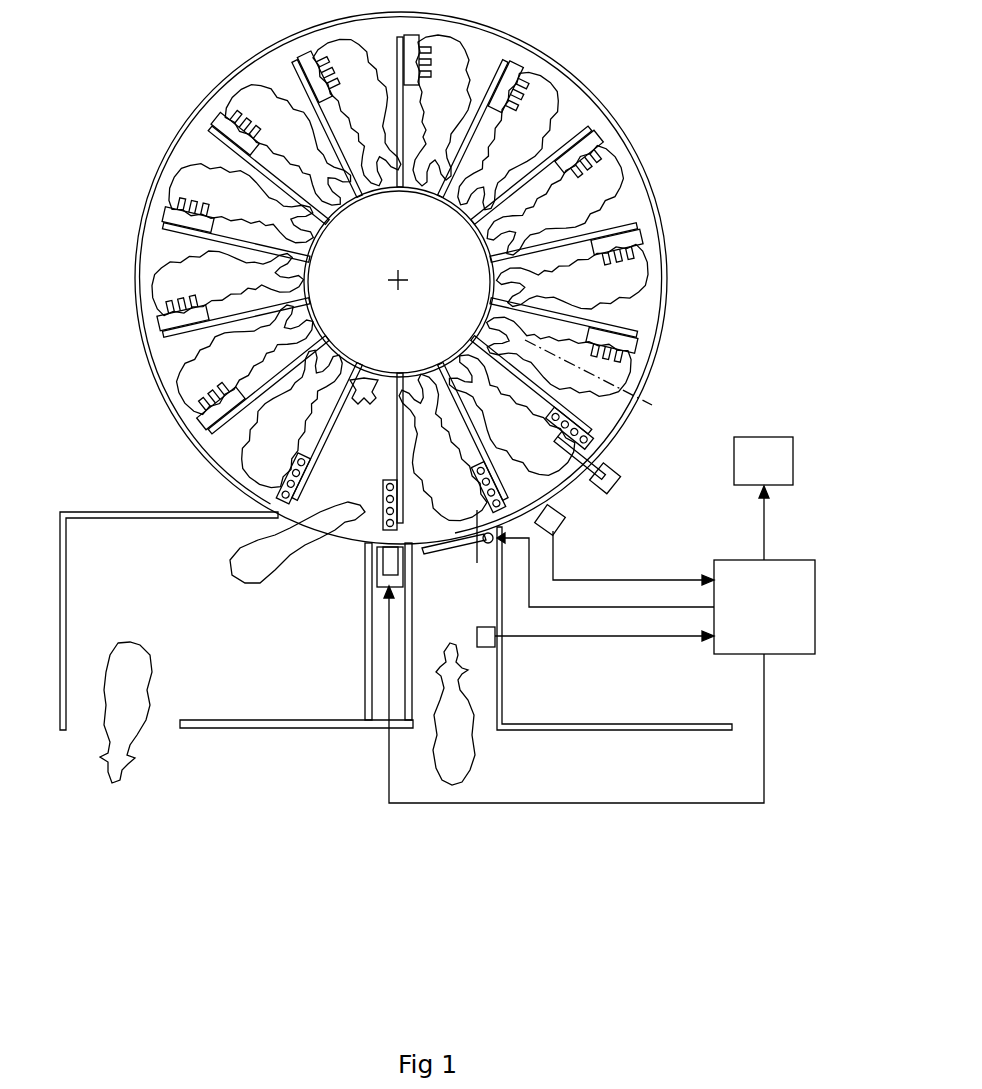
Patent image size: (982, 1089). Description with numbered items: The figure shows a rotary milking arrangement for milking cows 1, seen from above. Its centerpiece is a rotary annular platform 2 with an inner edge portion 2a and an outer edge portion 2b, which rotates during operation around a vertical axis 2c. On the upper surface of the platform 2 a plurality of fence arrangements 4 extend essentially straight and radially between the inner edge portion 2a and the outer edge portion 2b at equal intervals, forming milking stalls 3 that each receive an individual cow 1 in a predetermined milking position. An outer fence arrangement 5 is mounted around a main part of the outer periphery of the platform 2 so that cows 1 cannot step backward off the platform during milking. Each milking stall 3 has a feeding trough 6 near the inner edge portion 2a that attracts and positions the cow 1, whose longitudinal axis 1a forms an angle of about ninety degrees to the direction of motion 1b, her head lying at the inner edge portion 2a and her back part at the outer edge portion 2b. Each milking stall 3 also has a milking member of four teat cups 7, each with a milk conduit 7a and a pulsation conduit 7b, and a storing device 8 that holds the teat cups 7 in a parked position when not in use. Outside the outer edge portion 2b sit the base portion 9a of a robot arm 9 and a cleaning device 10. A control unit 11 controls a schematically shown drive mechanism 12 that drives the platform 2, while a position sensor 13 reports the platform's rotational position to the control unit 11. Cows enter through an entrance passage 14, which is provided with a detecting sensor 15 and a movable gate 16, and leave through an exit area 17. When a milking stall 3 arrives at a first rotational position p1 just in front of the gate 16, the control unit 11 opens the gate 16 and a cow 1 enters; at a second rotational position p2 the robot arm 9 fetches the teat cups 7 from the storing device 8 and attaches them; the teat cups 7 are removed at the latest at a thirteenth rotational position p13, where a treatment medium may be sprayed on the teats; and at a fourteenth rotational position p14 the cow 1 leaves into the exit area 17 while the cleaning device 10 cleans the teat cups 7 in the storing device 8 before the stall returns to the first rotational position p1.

The cow 1 is at (255, 100).
The longitudinal axis of the cows 1a is at (600, 385).
The direction of motion of the cows 1b is at (592, 352).
The rotary annular platform 2 is at (572, 112).
The inner edge portion 2a is at (453, 365).
The outer edge portion 2b is at (665, 280).
The vertical axis 2c is at (395, 272).
The milking stall 3 is at (227, 163).
The fence arrangement 4 is at (170, 227).
The outer fence arrangement 5 is at (639, 162).
The feeding trough 6 is at (493, 245).
The teat cup 7 is at (385, 503).
The milk conduit 7a is at (165, 305).
The pulsation conduit 7b is at (175, 322).
The storing device 8 is at (217, 417).
The robot arm 9 is at (603, 455).
The base portion of the robot arm 9a is at (616, 478).
The cleaning device 10 is at (388, 560).
The control unit 11 is at (783, 612).
The drive mechanism 12 is at (765, 455).
The position sensor 13 is at (555, 525).
The entrance passage 14 is at (478, 672).
The detecting sensor 15 is at (495, 637).
The movable gate 16 is at (445, 548).
The exit area 17 is at (228, 650).
The first rotational position p1 is at (481, 553).
The second rotational position p2 is at (563, 490).
The thirteenth rotational position p13 is at (228, 453).
The fourteenth rotational position p14 is at (363, 520).